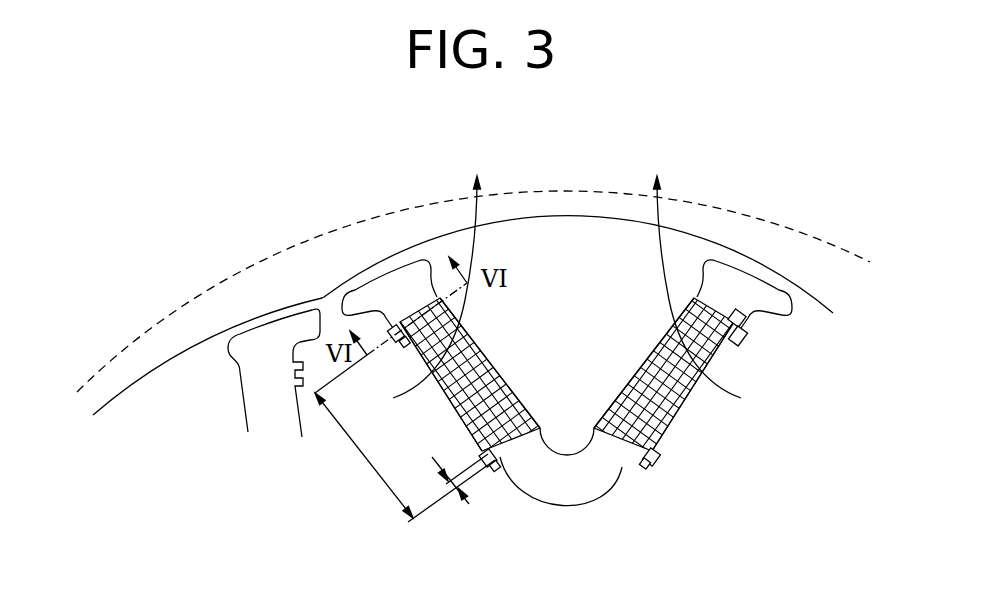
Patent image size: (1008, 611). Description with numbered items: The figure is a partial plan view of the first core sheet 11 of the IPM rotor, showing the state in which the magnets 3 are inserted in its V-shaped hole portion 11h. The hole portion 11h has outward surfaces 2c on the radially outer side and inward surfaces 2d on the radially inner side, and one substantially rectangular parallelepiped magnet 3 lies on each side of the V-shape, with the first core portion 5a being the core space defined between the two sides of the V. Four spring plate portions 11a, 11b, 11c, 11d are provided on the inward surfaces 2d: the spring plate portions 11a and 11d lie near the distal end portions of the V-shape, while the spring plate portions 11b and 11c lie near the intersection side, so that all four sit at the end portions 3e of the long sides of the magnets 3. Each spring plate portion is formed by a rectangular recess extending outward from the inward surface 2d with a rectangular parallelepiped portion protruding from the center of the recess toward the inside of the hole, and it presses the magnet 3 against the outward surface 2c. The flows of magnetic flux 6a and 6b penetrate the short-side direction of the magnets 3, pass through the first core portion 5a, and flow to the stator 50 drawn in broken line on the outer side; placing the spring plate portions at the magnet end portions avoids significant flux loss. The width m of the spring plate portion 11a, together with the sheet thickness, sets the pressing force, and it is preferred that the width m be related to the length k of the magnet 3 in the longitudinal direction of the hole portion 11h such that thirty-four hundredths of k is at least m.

The first core sheet 11 is at (83, 128).
The spring plate portion 11a is at (393, 347).
The spring plate portion 11b is at (478, 470).
The spring plate portion 11c is at (648, 452).
The spring plate portion 11d is at (740, 345).
The hole portion 11h is at (707, 297).
The magnet 3 is at (500, 413).
The end portion 3e is at (410, 308).
The outward surface 2c is at (473, 368).
The inward surface 2d is at (450, 397).
The first core portion 5a is at (550, 247).
The flow of magnetic flux 6a is at (442, 272).
The flow of magnetic flux 6b is at (692, 272).
The stator 50 is at (606, 192).
The length of the magnet k is at (405, 457).
The width of the spring plate portion m is at (451, 479).